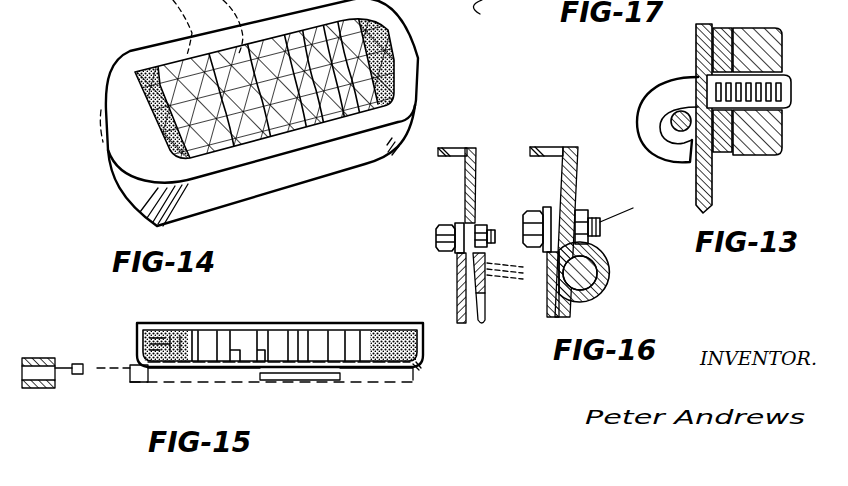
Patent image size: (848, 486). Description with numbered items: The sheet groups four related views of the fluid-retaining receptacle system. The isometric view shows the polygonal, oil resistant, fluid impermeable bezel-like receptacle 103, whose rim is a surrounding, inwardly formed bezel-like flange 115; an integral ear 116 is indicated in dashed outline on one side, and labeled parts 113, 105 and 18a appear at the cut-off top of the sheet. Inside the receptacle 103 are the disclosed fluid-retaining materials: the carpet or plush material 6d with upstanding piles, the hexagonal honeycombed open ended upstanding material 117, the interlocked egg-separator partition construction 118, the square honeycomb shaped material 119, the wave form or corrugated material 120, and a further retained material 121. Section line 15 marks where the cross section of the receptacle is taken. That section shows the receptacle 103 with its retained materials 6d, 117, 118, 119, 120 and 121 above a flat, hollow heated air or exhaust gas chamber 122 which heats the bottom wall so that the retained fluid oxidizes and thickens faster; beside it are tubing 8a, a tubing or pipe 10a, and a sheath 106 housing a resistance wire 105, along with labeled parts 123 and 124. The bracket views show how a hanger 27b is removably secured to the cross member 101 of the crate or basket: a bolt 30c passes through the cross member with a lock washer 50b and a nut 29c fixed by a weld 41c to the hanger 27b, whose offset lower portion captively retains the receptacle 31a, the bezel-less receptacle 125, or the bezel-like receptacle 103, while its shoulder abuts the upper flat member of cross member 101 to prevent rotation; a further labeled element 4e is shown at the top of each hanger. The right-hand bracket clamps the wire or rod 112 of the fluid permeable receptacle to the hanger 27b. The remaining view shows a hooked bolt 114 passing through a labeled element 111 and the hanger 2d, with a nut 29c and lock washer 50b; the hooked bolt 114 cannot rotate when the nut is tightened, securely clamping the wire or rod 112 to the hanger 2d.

In FIG. 14, the bezel-like receptacle device 103 is at (106, 100).
In FIG. 15, the bezel-like receptacle device 103 is at (280, 345).
In FIG. 16, the bezel-like receptacle device 103 is at (490, 324).
In FIG. 14, the integral ear 116 is at (181, 33).
In FIG. 14, the strap loop 113 is at (240, 15).
In FIG. 14, the resistance wire 105 is at (143, 5).
In FIG. 15, the resistance wire 105 is at (62, 380).
In FIG. 14, the carpet or plush material 6d is at (196, 160).
In FIG. 15, the carpet or plush material 6d is at (175, 333).
In FIG. 14, the honeycombed open ended upstanding material 117 is at (238, 158).
In FIG. 15, the honeycombed open ended upstanding material 117 is at (200, 333).
In FIG. 14, the interlocked partition construction 118 is at (277, 145).
In FIG. 15, the interlocked partition construction 118 is at (250, 333).
In FIG. 14, the square honeycomb shaped material 119 is at (327, 132).
In FIG. 15, the square honeycomb shaped material 119 is at (295, 333).
In FIG. 14, the wave form configuration material 120 is at (363, 127).
In FIG. 15, the wave form configuration material 120 is at (350, 340).
In FIG. 14, the retained material 121 is at (417, 101).
In FIG. 15, the retained material 121 is at (417, 325).
In FIG. 14, the bezel-like flange 115 is at (167, 163).
In FIG. 15, the bezel-like flange 115 is at (157, 320).
In FIG. 16, the bezel-like flange 115 is at (524, 265).
In FIG. 14, the section line 15 is at (107, 162).
In FIG. 15, the weld 41c is at (137, 360).
In FIG. 16, the weld 41c is at (472, 212).
In FIG. 15, the base step 124 is at (170, 364).
In FIG. 15, the heated air or exhaust gas chamber 122 is at (400, 388).
In FIG. 15, the sheath 106 is at (297, 381).
In FIG. 15, the plate slot 123 is at (357, 381).
In FIG. 15, the tubing or pipe 10a is at (50, 357).
In FIG. 15, the tubing 8a is at (110, 375).
In FIG. 16, the flange 4e is at (458, 147).
In FIG. 16, the hanger 27b is at (563, 184).
In FIG. 16, the bolt 30c is at (436, 238).
In FIG. 16, the nut 29c is at (474, 224).
In FIG. 13, the nut 29c is at (763, 40).
In FIG. 16, the lock washer 50b is at (487, 246).
In FIG. 13, the lock washer 50b is at (723, 152).
In FIG. 16, the cross member 101 is at (456, 276).
In FIG. 16, the receptacle 125 is at (486, 310).
In FIG. 16, the receptacle 31a is at (488, 356).
In FIG. 16, the wire or rod 112 is at (602, 283).
In FIG. 13, the wire or rod 112 is at (671, 134).
In FIG. 13, the wall plate 111 is at (712, 185).
In FIG. 13, the hanger 2d is at (705, 33).
In FIG. 13, the hooked bolt 114 is at (662, 95).
In FIG. 13, the strap end 18a is at (690, 0).